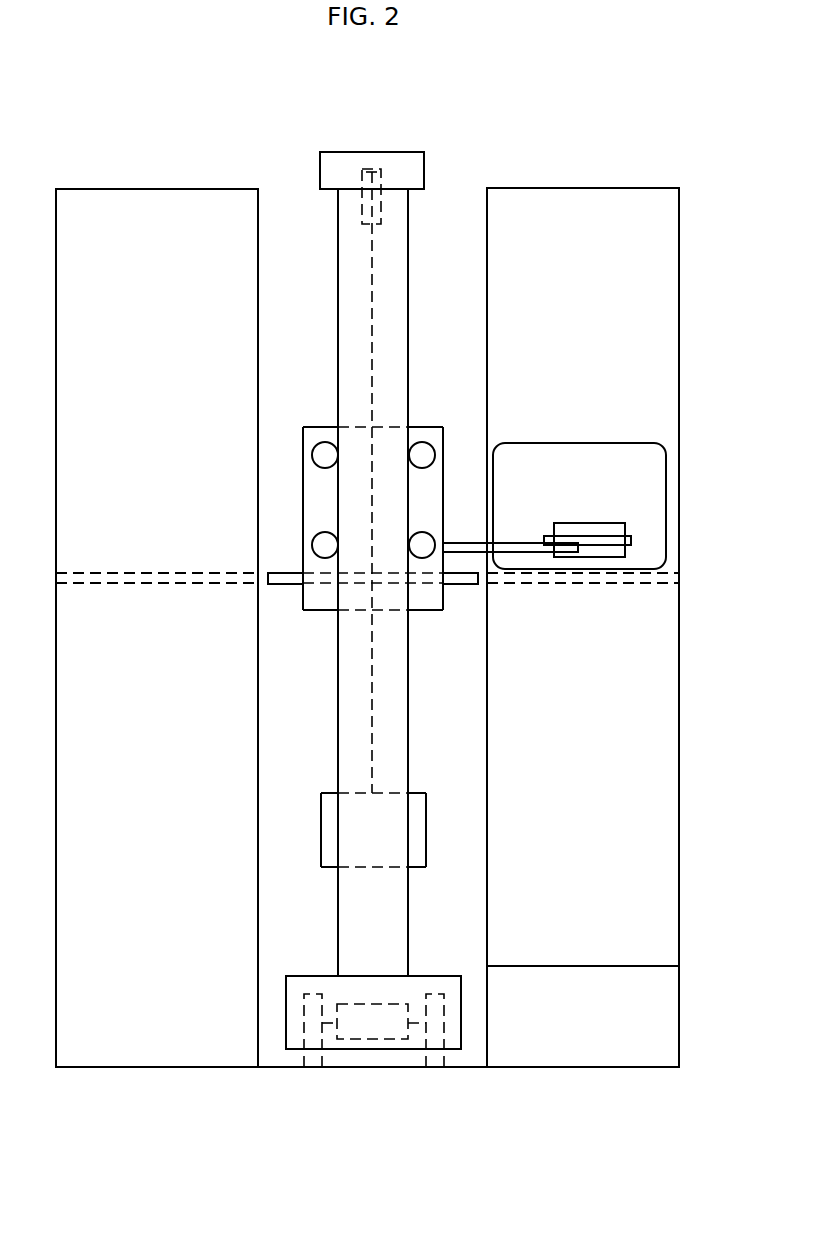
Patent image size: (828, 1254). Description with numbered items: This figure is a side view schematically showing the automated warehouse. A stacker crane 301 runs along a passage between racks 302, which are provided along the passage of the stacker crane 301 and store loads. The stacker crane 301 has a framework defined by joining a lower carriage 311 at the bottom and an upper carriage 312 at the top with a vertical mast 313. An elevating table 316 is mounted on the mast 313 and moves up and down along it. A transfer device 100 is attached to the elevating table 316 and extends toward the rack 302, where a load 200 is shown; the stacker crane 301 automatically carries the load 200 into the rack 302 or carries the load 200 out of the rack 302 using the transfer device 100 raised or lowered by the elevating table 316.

The transfer device 100 is at (592, 546).
The load 200 is at (597, 502).
The stacker crane 301 is at (430, 427).
The rack 302 is at (175, 189).
The lower carriage 311 is at (428, 976).
The upper carriage 312 is at (412, 152).
The mast 313 is at (409, 273).
The elevating table 316 is at (441, 610).